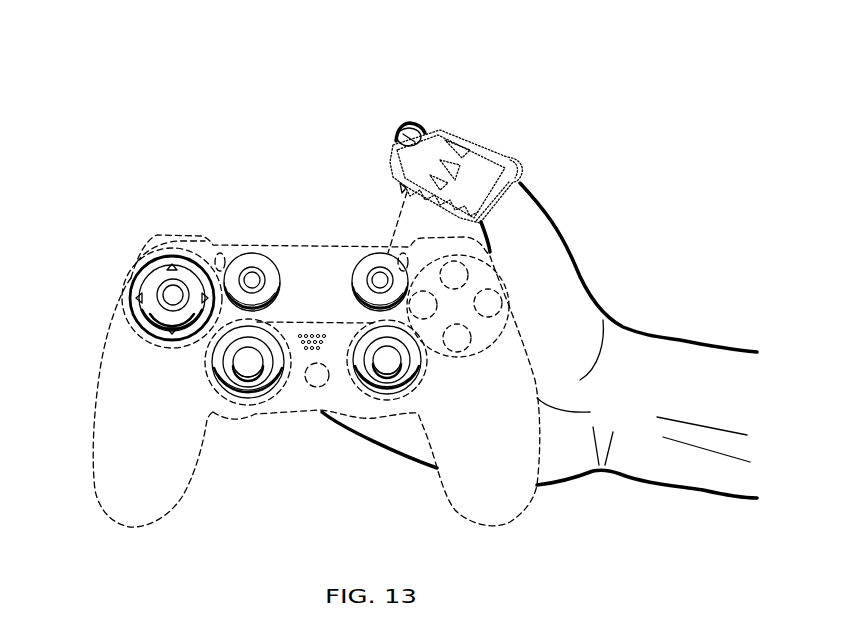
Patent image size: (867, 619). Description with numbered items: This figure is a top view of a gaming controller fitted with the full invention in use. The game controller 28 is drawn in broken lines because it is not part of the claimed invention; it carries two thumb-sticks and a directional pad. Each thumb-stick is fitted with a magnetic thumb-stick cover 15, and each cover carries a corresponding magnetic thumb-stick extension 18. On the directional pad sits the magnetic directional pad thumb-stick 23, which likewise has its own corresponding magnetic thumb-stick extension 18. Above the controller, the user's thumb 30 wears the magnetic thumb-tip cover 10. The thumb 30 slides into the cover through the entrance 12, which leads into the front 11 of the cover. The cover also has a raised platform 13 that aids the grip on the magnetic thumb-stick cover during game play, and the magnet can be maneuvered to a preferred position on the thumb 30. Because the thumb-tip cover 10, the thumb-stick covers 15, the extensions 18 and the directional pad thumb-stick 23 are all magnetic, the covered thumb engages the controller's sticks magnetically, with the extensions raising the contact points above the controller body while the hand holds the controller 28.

The magnetic thumb-tip cover 10 is at (425, 127).
The front 11 is at (398, 137).
The entrance 12 is at (517, 158).
The raised platform 13 is at (400, 186).
The magnetic thumb-stick cover 15 is at (247, 365).
The magnetic thumb-stick extension 18 is at (253, 270).
The magnetic directional pad thumb-stick 23 is at (165, 290).
The game controller 28 is at (130, 515).
The thumb 30 is at (535, 182).